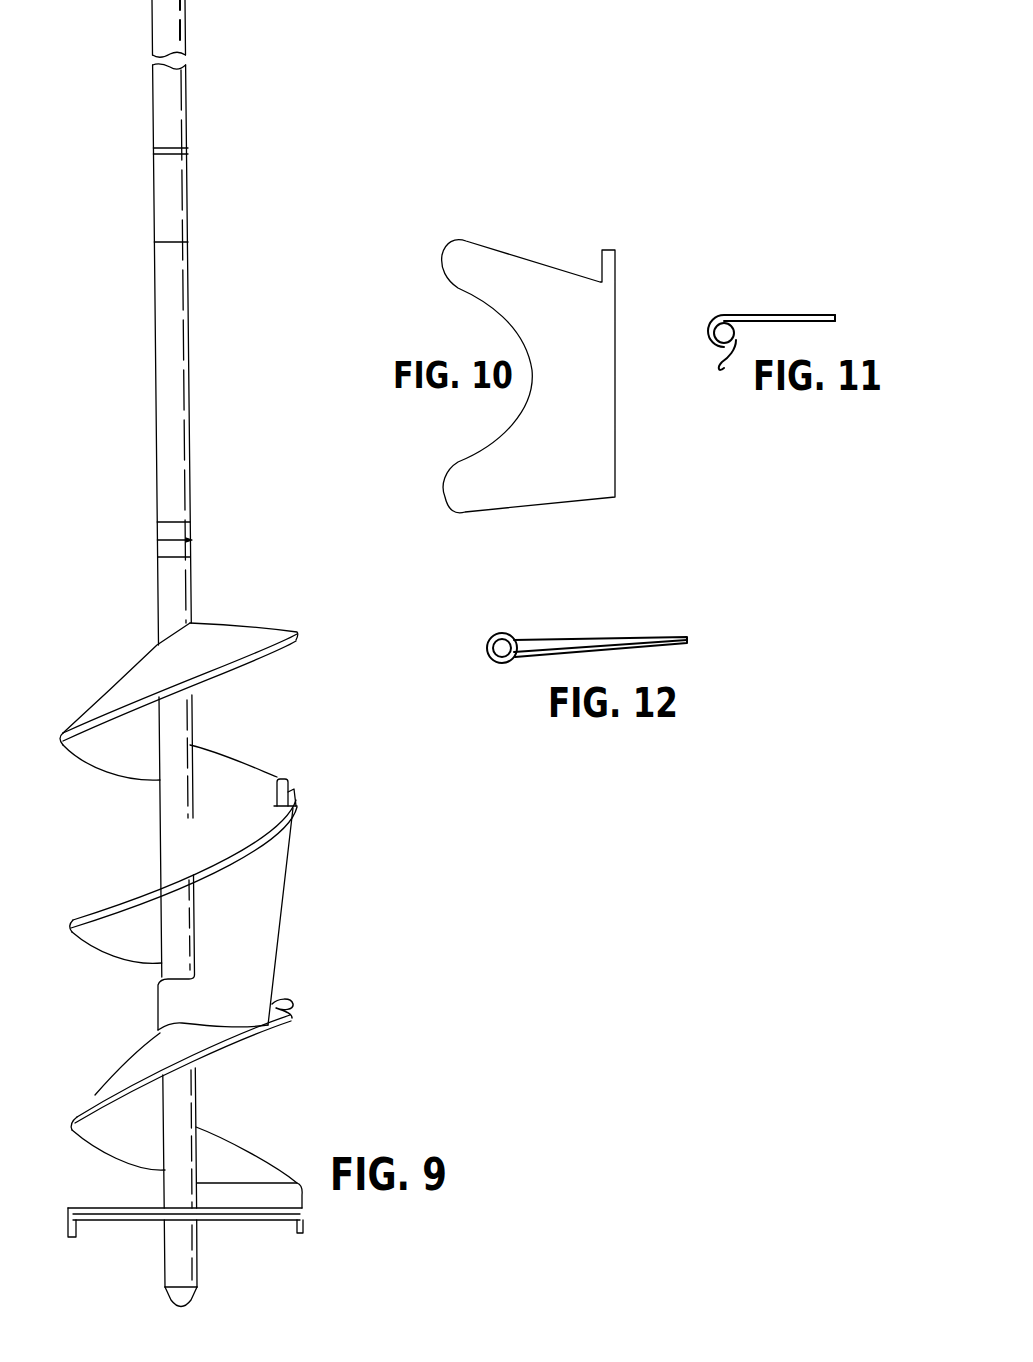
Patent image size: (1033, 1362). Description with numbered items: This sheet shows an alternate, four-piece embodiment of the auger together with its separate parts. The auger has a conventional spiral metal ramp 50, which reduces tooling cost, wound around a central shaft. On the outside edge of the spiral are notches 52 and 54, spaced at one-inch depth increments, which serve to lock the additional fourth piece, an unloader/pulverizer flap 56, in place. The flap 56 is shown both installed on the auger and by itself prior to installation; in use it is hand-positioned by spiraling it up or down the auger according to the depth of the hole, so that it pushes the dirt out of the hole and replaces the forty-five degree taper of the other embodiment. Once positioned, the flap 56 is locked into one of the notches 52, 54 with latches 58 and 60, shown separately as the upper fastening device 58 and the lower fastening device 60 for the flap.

In FIG. 9, the spiral metal ramp 50 is at (235, 633).
In FIG. 9, the notch 52 is at (302, 796).
In FIG. 9, the notch 54 is at (290, 1002).
In FIG. 9, the unloader/pulverizer flap 56 is at (268, 897).
In FIG. 10, the unloader/pulverizer flap 56 is at (607, 338).
In FIG. 11, the latch 58 is at (778, 312).
In FIG. 12, the latch 60 is at (592, 644).